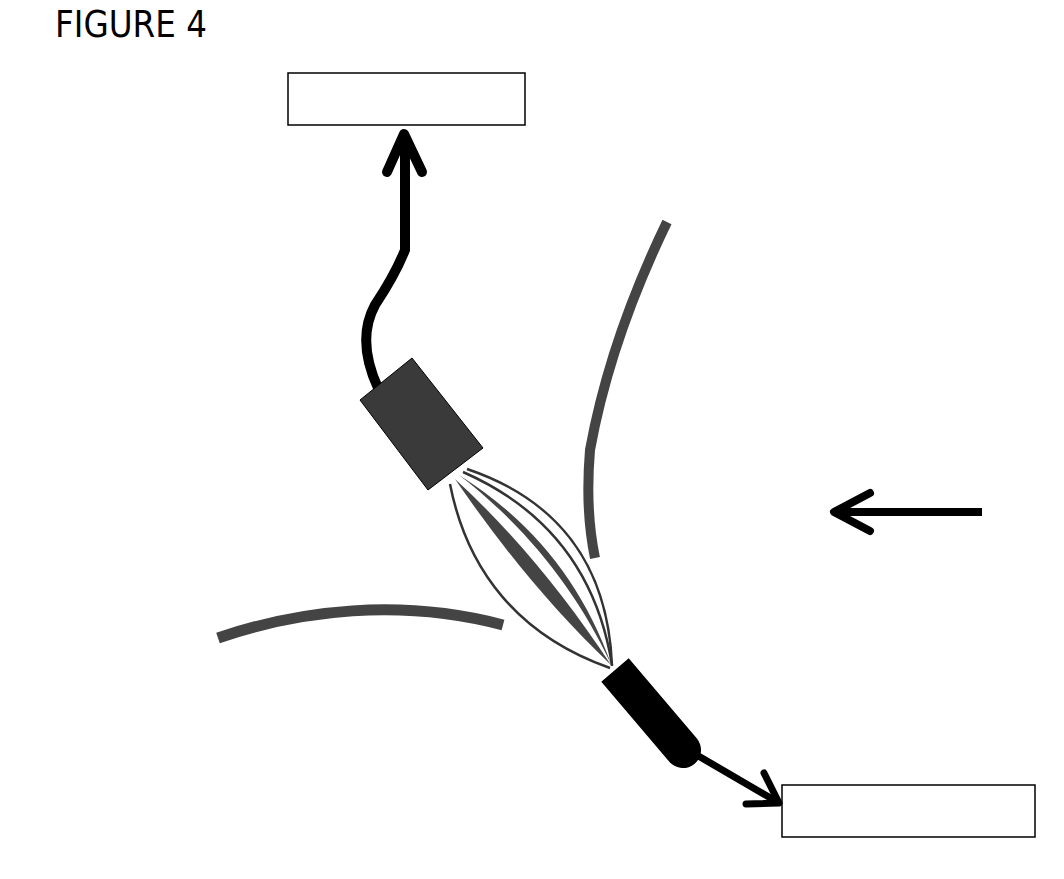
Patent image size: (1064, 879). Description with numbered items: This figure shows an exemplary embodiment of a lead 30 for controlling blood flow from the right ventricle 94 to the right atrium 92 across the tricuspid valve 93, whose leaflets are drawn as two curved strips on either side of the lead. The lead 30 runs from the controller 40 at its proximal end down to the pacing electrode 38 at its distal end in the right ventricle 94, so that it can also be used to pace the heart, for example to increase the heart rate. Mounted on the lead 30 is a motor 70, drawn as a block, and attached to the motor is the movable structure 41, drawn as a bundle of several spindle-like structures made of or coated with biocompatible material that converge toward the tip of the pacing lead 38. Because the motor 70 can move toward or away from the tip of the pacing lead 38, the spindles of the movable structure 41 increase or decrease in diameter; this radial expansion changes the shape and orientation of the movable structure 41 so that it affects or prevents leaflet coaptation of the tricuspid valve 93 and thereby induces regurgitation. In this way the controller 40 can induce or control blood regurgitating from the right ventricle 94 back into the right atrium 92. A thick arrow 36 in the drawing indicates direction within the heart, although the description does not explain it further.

The lead 30 is at (327, 303).
The direction of blood flow arrow 36 is at (929, 512).
The pacing electrode 38 is at (908, 811).
The controller 40 is at (406, 99).
The movable structure 41 is at (560, 487).
The motor 70 is at (360, 428).
The right atrium 92 is at (501, 213).
The tricuspid valve 93 is at (742, 243).
The right ventricle 94 is at (920, 736).